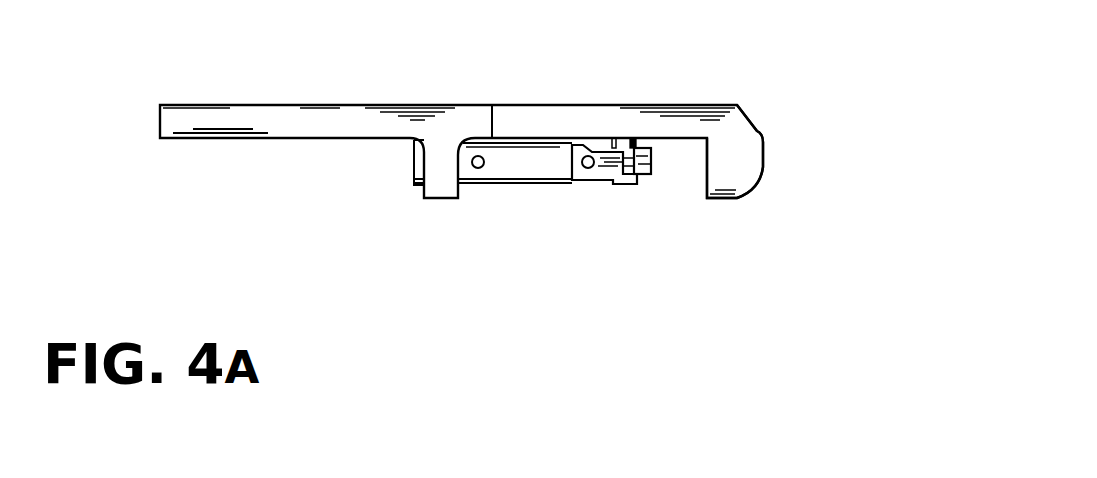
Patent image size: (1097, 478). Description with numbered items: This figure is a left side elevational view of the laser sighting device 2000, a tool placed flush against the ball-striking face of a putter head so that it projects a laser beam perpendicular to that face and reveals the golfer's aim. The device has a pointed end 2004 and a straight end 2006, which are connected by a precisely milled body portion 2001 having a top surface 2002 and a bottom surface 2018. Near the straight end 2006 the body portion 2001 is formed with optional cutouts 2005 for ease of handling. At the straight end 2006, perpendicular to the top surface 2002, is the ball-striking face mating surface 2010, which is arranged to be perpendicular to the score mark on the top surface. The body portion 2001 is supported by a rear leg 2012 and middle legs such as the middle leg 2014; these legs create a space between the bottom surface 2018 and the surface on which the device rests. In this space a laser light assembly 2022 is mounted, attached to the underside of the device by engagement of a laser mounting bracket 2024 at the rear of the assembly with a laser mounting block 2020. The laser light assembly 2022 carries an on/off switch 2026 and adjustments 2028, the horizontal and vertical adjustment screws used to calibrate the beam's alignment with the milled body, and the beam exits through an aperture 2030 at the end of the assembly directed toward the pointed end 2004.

The laser sighting device 2000 is at (727, 89).
The body portion 2001 is at (307, 120).
The top surface 2002 is at (453, 112).
The pointed end 2004 is at (193, 105).
The cutouts 2005 is at (585, 122).
The straight end 2006 is at (688, 140).
The ball-striking face mating surface 2010 is at (767, 155).
The rear leg 2012 is at (729, 175).
The middle leg 2014 is at (430, 162).
The bottom surface 2018 is at (230, 140).
The laser mounting block 2020 is at (628, 185).
The laser light assembly 2022 is at (478, 184).
The laser mounting bracket 2024 is at (606, 143).
The on/off switch 2026 is at (584, 181).
The adjustments 2028 is at (475, 168).
The aperture 2030 is at (411, 182).